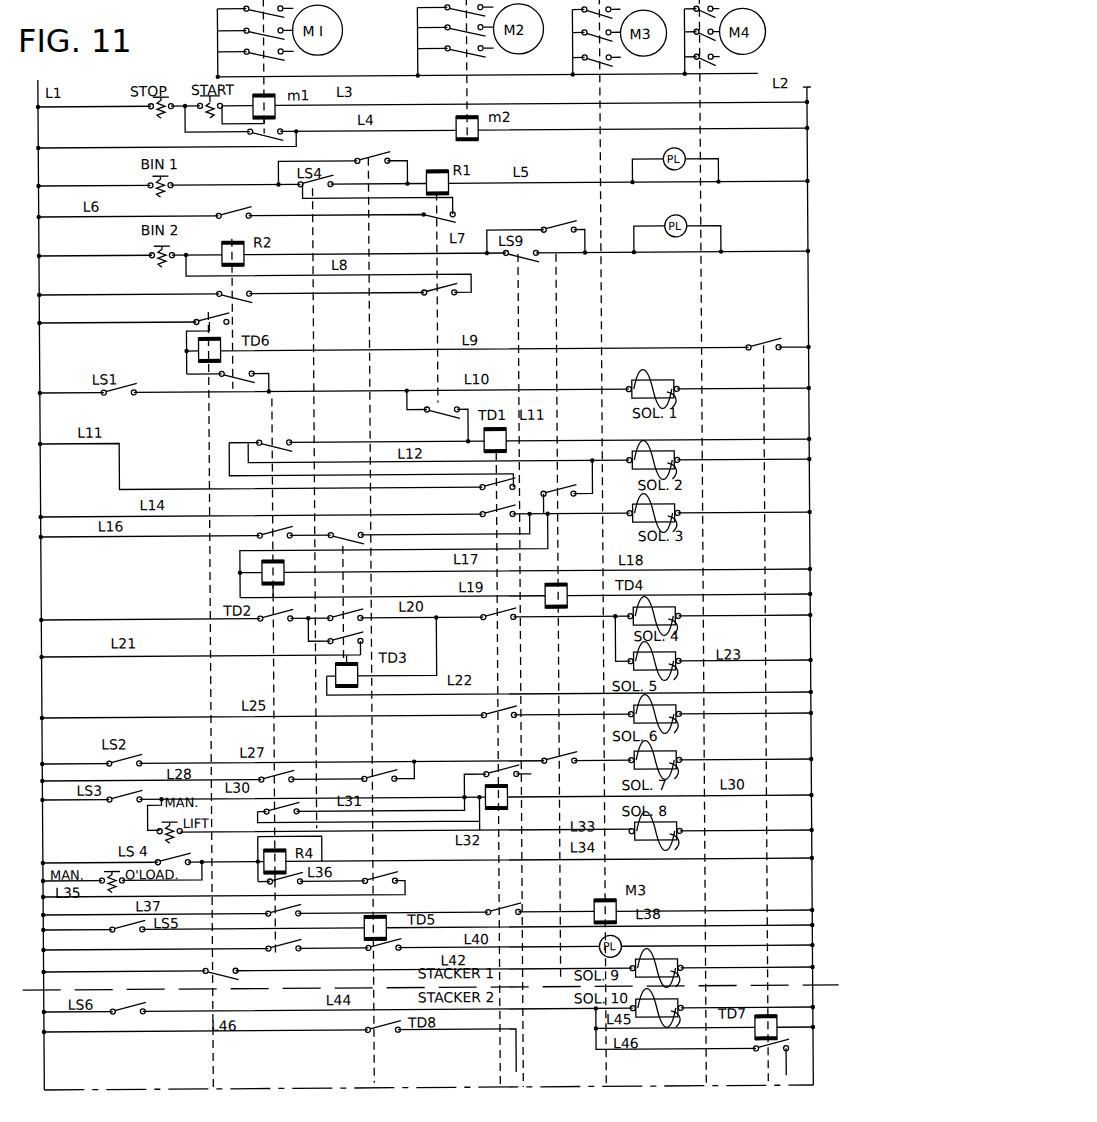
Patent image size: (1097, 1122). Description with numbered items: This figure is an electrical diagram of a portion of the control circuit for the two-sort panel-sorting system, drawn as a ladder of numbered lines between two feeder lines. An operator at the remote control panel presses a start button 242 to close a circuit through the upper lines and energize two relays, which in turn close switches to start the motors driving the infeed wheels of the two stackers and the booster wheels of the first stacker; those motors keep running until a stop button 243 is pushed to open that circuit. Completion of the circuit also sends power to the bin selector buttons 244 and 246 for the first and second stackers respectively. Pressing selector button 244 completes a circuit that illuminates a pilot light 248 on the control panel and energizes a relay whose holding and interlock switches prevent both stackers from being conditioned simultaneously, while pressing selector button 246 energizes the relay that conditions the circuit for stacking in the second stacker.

The start button 242 is at (190, 92).
The stop button 243 is at (148, 116).
The bin selector button 244 is at (176, 183).
The bin selector button 246 is at (172, 252).
The pilot light 248 is at (665, 158).